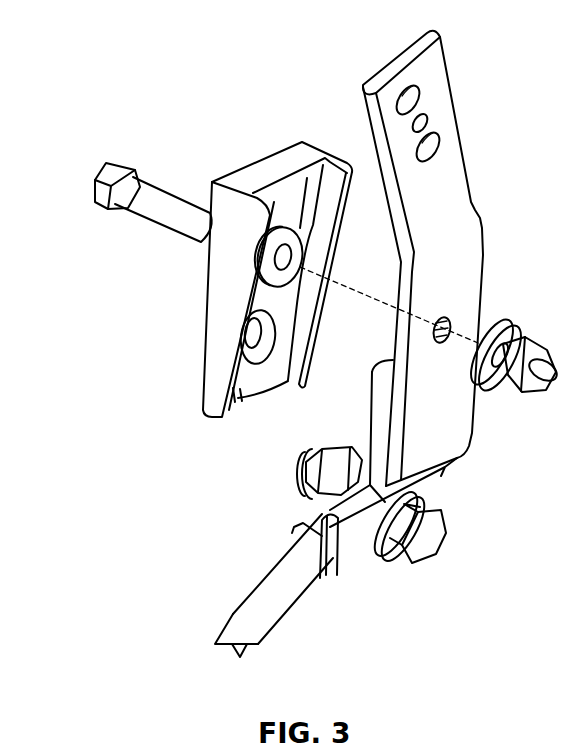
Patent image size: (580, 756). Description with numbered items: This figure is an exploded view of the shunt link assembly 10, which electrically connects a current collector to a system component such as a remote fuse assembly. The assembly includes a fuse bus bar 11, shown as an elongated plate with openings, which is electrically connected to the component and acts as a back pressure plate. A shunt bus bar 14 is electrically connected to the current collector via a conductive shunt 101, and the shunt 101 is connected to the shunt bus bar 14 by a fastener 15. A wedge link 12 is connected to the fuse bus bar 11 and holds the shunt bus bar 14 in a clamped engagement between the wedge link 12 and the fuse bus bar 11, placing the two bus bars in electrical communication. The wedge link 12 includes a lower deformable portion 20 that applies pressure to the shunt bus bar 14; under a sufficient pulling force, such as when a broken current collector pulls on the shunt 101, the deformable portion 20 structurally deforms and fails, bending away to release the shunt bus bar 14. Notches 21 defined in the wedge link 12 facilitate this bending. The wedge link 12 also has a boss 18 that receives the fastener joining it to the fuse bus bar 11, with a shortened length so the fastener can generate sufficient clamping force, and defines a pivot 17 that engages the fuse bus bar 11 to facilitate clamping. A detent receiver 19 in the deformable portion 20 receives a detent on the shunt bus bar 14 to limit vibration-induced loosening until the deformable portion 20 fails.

The shunt link assembly 10 is at (187, 92).
The fuse bus bar 11 is at (462, 234).
The wedge link 12 is at (263, 173).
The shunt bus bar 14 is at (445, 480).
The fastener 15 is at (126, 197).
The pivot 17 is at (277, 172).
The boss 18 is at (300, 232).
The detent receiver 19 is at (233, 414).
The lower deformable portion 20 is at (205, 398).
The notch 21 is at (236, 331).
The shunt 101 is at (268, 618).